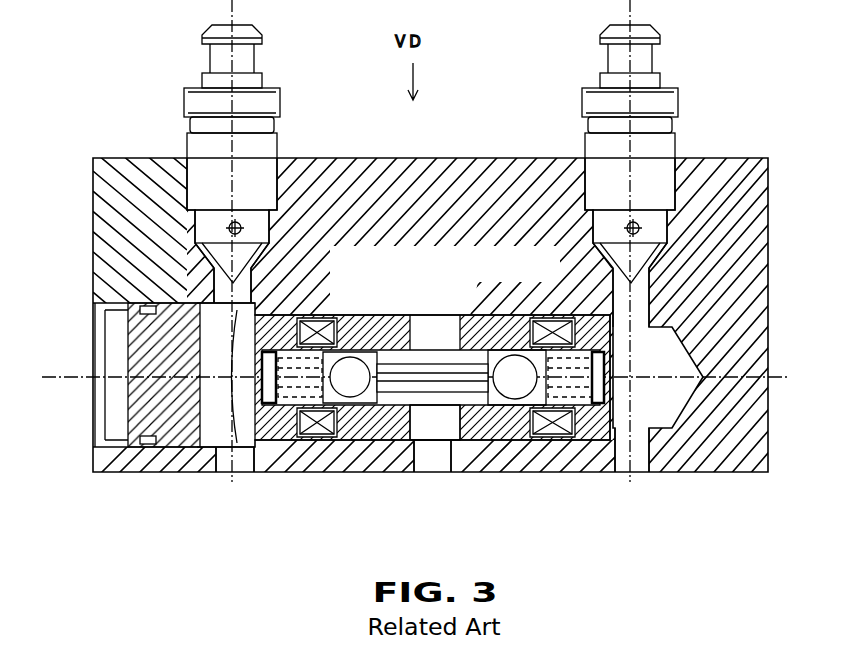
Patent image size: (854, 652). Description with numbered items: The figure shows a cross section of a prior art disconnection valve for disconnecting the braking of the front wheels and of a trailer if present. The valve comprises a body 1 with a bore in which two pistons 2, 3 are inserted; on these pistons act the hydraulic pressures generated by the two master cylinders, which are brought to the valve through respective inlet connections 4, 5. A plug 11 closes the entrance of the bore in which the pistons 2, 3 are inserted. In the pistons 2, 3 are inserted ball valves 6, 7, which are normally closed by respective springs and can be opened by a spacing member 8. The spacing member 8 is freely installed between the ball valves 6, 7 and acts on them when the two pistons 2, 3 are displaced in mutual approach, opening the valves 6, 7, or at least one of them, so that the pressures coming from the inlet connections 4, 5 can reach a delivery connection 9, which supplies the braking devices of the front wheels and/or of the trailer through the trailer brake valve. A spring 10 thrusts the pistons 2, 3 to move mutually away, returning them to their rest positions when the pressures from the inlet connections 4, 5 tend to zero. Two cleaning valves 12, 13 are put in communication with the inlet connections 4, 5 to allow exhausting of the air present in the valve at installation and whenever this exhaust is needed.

The body 1 is at (750, 258).
The piston 2 is at (517, 313).
The piston 3 is at (360, 316).
The inlet connection 4 is at (640, 460).
The inlet connection 5 is at (228, 462).
The ball valve 6 is at (514, 392).
The ball valve 7 is at (350, 392).
The spacing member 8 is at (437, 392).
The delivery connection 9 is at (446, 450).
The spring 10 is at (442, 312).
The plug 11 is at (130, 344).
The cleaning valve 12 is at (598, 146).
The cleaning valve 13 is at (262, 153).